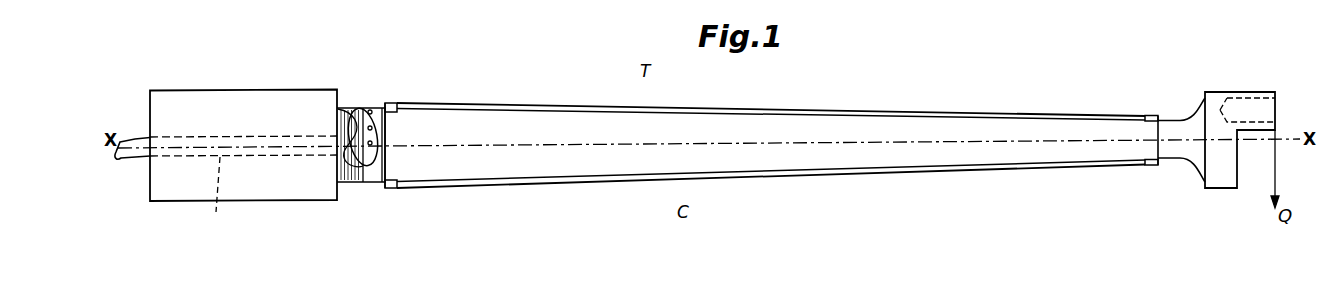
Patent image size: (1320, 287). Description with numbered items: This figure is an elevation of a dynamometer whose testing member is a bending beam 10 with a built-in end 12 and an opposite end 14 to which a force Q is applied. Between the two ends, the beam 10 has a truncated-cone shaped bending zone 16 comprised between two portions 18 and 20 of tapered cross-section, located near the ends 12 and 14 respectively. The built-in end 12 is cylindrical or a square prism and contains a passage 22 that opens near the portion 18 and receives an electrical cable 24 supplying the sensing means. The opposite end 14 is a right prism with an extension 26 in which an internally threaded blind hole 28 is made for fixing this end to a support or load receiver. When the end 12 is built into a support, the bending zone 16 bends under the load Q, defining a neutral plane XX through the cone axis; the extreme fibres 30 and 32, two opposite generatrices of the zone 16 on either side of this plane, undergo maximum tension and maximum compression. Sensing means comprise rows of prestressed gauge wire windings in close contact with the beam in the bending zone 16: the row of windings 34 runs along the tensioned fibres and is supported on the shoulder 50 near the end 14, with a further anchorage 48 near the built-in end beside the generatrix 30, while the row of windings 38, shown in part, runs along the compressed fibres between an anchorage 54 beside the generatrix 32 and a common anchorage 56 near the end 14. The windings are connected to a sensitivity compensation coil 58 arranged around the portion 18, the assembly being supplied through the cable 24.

The bending beam 10 is at (760, 104).
The built-in end 12 is at (239, 108).
The opposite end 14 is at (1210, 92).
The bending zone 16 is at (765, 148).
The portion of tapered cross-section 18 is at (373, 172).
The portion of tapered cross-section 20 is at (1180, 158).
The passage 22 is at (212, 199).
The electrical cable 24 is at (133, 157).
The extension 26 is at (1250, 92).
The internally threaded blind hole 28 is at (1277, 104).
The extreme fibre 30 is at (520, 103).
The extreme fibre 32 is at (518, 188).
The row of windings 34 is at (570, 109).
The row of windings 38 is at (610, 178).
The anchorage 48 is at (388, 108).
The shoulder 50 is at (1148, 115).
The anchorage 54 is at (388, 188).
The common anchorage 56 is at (1150, 166).
The sensitivity compensation coil 58 is at (355, 108).